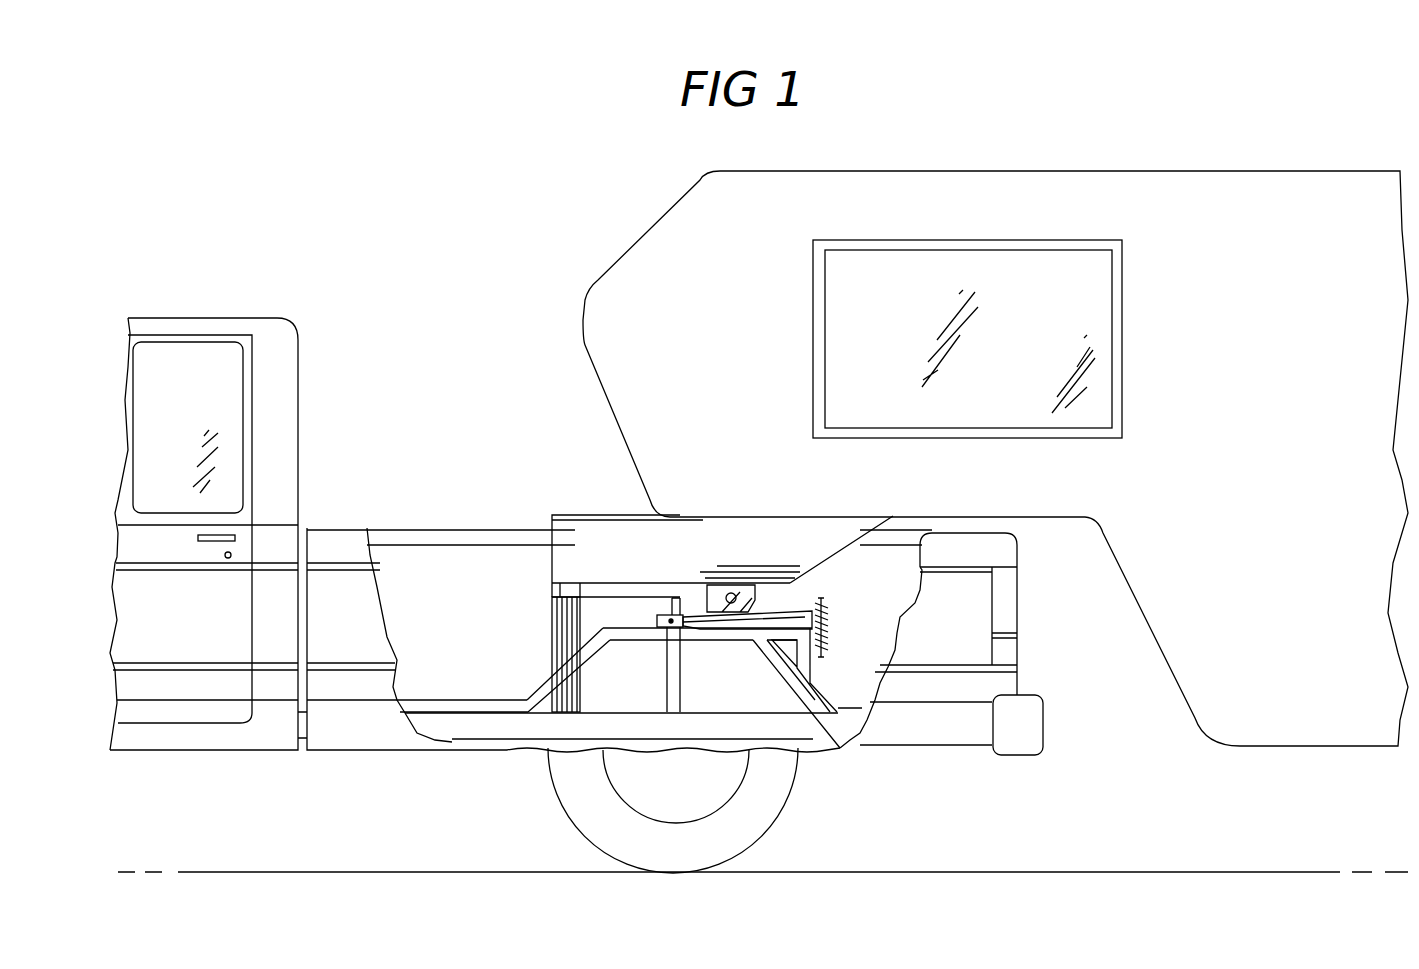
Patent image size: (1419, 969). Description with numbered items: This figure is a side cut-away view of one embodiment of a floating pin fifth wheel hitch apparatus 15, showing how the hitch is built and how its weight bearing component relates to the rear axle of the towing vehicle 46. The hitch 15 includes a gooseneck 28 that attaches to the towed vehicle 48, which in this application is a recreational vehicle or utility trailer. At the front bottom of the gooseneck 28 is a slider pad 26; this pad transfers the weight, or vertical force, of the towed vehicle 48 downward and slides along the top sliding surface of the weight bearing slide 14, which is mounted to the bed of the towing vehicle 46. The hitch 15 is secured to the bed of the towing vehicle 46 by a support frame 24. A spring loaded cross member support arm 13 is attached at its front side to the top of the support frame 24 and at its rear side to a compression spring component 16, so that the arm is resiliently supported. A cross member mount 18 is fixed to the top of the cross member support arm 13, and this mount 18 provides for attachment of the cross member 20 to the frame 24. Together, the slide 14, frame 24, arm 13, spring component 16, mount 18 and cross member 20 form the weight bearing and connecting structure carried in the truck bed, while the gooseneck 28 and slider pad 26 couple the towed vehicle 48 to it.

The cross member support arm 13 is at (789, 622).
The weight bearing slide 14 is at (628, 673).
The floating pin fifth wheel hitch apparatus 15 is at (714, 634).
The compression spring component 16 is at (840, 628).
The cross member mount 18 is at (762, 567).
The cross member 20 is at (713, 595).
The support frame 24 is at (590, 648).
The slider pad 26 is at (550, 590).
The gooseneck 28 is at (628, 553).
The towing vehicle 46 is at (216, 312).
The towed vehicle 48 is at (658, 216).